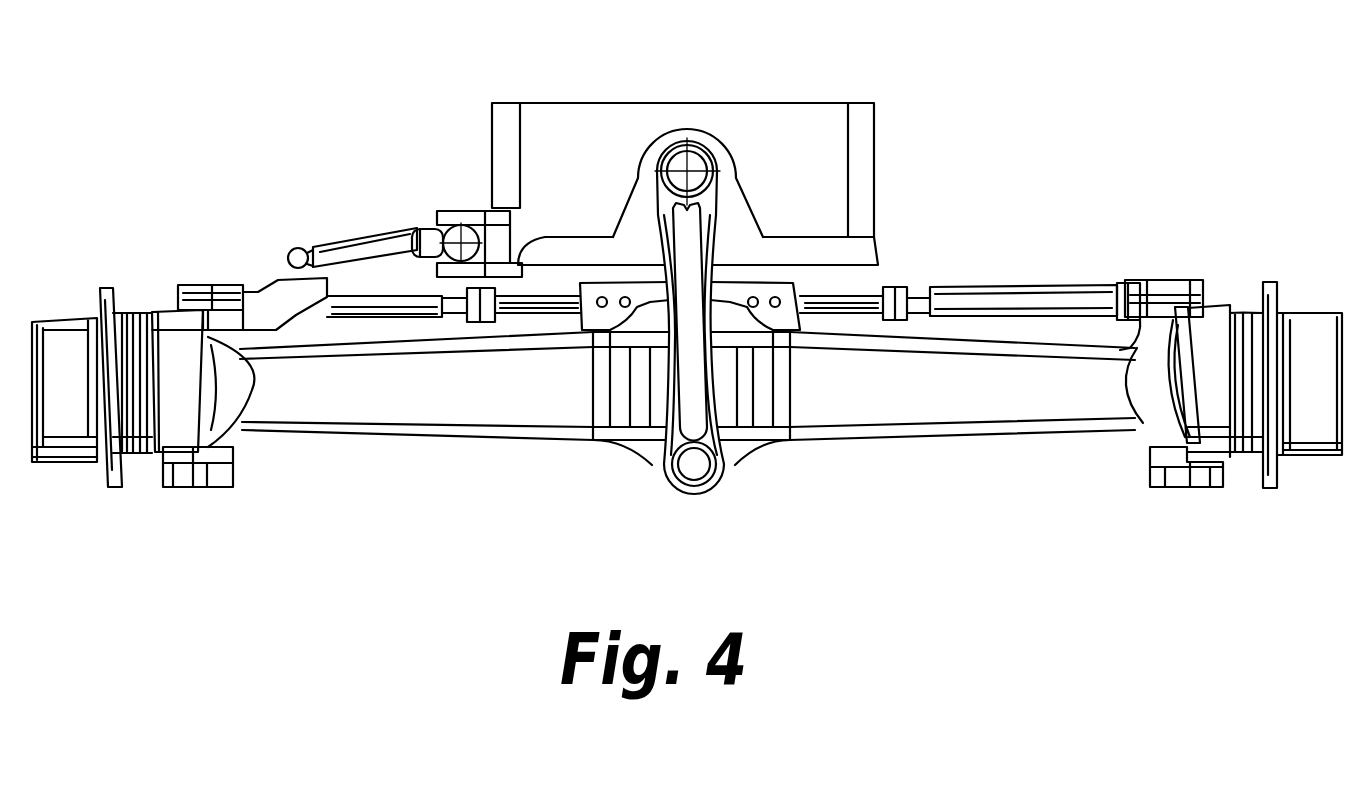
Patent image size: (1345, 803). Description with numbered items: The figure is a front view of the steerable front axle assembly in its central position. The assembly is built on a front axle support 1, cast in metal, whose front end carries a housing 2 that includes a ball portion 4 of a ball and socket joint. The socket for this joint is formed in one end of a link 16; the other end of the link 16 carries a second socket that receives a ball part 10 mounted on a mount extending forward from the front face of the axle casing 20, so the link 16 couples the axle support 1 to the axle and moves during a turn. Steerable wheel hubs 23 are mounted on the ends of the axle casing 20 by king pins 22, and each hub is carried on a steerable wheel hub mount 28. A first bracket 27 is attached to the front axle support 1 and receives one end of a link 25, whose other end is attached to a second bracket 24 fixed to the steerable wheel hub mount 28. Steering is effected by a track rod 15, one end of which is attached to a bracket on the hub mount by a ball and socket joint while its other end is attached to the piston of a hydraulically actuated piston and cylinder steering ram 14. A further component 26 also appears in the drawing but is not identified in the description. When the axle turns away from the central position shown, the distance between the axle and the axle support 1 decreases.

The front axle support 1 is at (874, 130).
The housing 2 is at (718, 140).
The ball portion 4 is at (678, 157).
The ball part 10 is at (690, 463).
The hydraulically actuated piston and cylinder steering ram 14 is at (880, 265).
The track rod 15 is at (356, 305).
The link 16 is at (726, 466).
The axle casing 20 is at (413, 400).
The king pins 22 is at (193, 488).
The steerable wheel hubs 23 is at (65, 462).
The second bracket 24 is at (276, 283).
The link 25 is at (363, 246).
The ball joint 26 is at (305, 250).
The first bracket 27 is at (456, 222).
The steerable wheel hub mount 28 is at (496, 273).